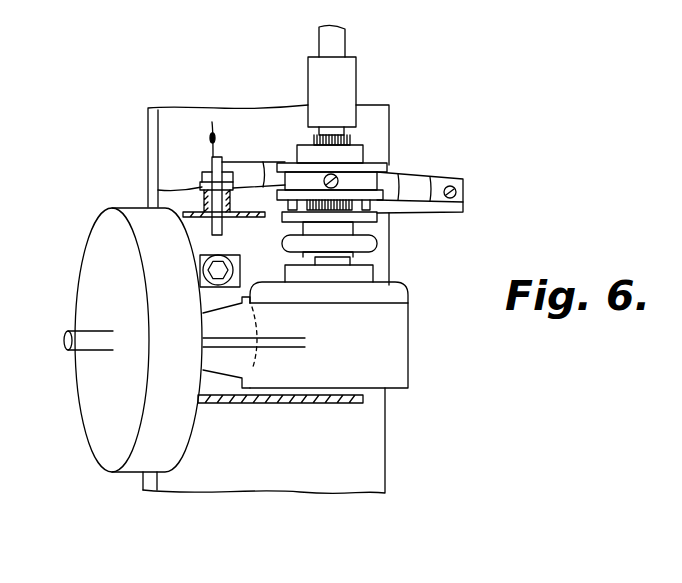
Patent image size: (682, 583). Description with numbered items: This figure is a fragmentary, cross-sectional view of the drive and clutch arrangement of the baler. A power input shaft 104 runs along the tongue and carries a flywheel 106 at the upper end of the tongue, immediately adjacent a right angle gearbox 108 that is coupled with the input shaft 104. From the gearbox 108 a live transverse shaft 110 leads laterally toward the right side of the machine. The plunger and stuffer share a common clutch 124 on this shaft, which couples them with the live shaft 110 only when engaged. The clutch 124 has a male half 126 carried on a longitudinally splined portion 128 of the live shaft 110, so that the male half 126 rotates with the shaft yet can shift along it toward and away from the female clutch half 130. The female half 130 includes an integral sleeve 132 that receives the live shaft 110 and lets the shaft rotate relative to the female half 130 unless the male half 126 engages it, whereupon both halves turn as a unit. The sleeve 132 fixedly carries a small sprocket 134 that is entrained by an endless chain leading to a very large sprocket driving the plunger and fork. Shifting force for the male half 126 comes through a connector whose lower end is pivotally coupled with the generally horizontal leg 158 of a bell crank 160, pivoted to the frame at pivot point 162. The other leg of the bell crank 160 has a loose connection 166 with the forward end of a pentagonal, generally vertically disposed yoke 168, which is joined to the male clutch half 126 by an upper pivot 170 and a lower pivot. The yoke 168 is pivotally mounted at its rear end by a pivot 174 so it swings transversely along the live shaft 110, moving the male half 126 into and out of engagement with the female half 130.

The power input shaft 104 is at (65, 342).
The flywheel 106 is at (87, 273).
The right angle gearbox 108 is at (397, 373).
The live transverse shaft 110 is at (340, 262).
The clutch 124 is at (378, 146).
The male clutch half 126 is at (378, 162).
The longitudinally splined portion 128 is at (352, 142).
The female clutch half 130 is at (287, 220).
The sleeve 132 is at (348, 228).
The small sprocket 134 is at (377, 252).
The generally horizontal leg 158 is at (212, 233).
The bell crank 160 is at (212, 122).
The pivot point 162 is at (160, 190).
The loose connection 166 is at (203, 170).
The yoke 168 is at (242, 163).
The upper pivot 170 is at (325, 180).
The pivot 174 is at (466, 188).